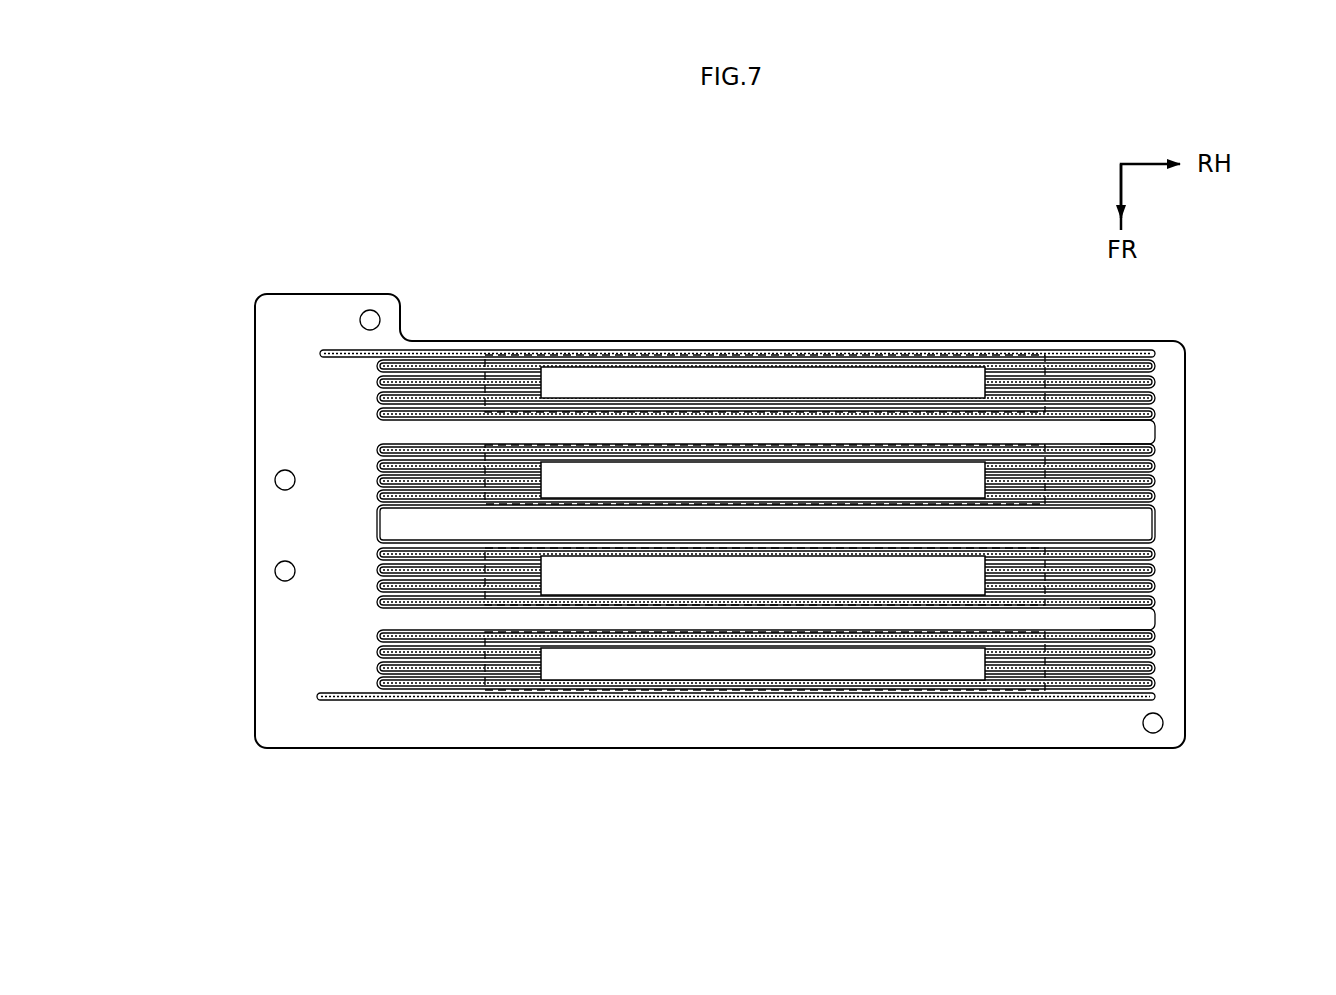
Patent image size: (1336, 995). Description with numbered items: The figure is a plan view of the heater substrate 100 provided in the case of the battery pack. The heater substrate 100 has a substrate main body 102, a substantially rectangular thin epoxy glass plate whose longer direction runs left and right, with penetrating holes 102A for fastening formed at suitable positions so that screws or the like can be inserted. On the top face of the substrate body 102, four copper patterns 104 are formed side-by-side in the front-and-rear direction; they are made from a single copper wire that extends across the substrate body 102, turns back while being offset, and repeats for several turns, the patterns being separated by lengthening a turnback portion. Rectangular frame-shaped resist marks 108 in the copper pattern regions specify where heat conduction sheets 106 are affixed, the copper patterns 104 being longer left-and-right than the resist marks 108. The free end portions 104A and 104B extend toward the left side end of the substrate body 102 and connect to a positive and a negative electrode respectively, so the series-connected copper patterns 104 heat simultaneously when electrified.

The heater substrate 100 is at (810, 279).
The substrate main body 102 is at (252, 715).
The penetrating holes 102A is at (370, 309).
The copper patterns 104 is at (1162, 388).
The free end portion 104A is at (322, 701).
The free end portion 104B is at (321, 343).
The heat conduction sheets 106 is at (632, 385).
The resist marks 108 is at (485, 388).